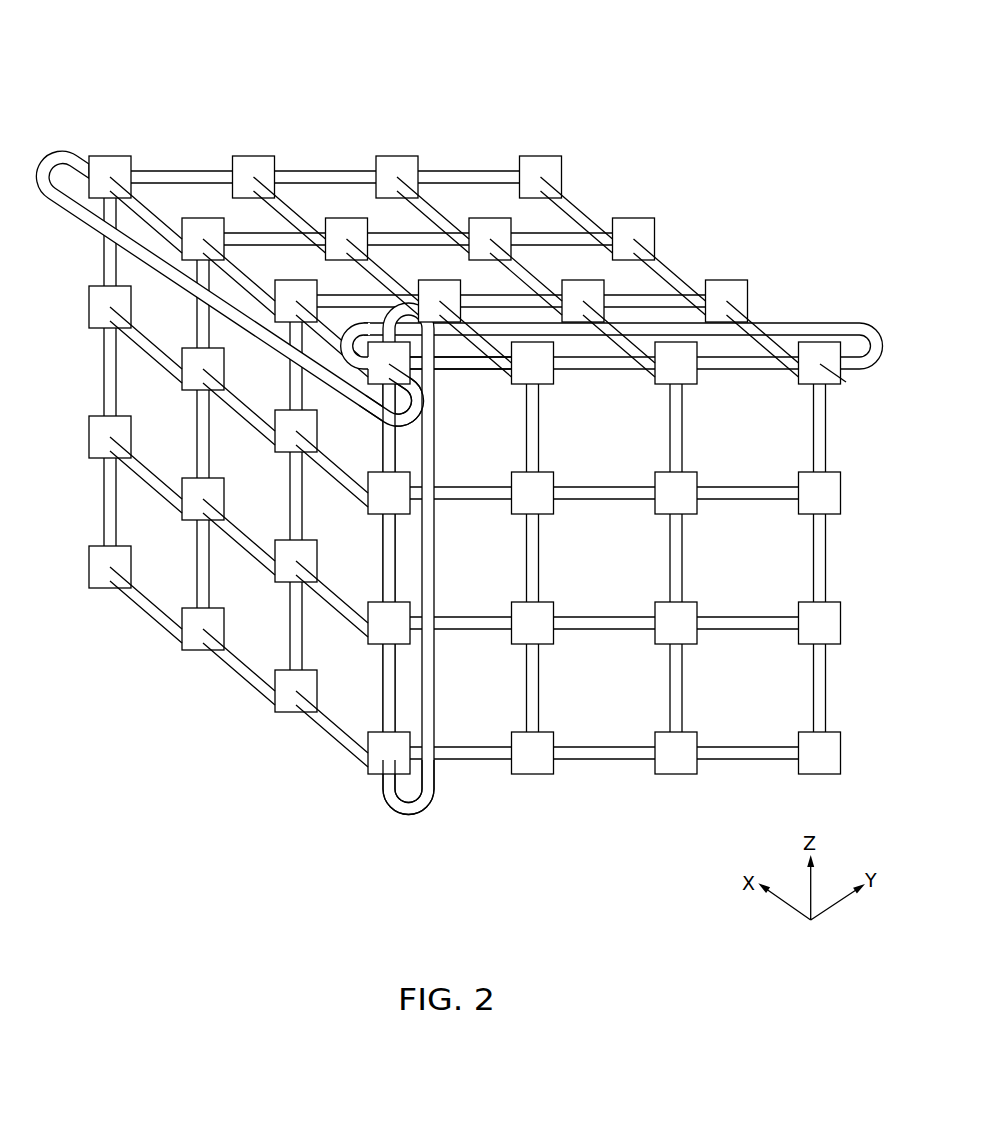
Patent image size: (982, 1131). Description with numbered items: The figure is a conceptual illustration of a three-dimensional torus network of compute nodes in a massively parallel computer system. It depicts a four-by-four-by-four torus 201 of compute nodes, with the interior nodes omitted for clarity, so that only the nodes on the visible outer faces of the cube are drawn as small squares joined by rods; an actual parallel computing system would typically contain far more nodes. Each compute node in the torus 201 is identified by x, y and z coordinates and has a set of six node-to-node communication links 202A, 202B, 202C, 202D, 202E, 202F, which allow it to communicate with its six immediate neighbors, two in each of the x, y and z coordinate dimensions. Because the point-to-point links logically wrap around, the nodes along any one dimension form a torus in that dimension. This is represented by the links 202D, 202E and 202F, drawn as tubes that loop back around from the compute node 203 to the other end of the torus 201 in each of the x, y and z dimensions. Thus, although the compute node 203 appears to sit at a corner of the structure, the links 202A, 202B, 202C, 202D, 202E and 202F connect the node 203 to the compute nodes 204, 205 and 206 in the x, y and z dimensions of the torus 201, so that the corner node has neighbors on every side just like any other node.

The torus 201 is at (612, 82).
The node-to-node communication link 202A is at (459, 371).
The node-to-node communication link 202B is at (401, 452).
The node-to-node communication link 202C is at (344, 327).
The node-to-node communication link 202D is at (837, 318).
The node-to-node communication link 202E is at (407, 815).
The node-to-node communication link 202F is at (51, 152).
The compute node 203 is at (386, 390).
The compute node 204 is at (111, 166).
The compute node 205 is at (827, 377).
The compute node 206 is at (378, 760).